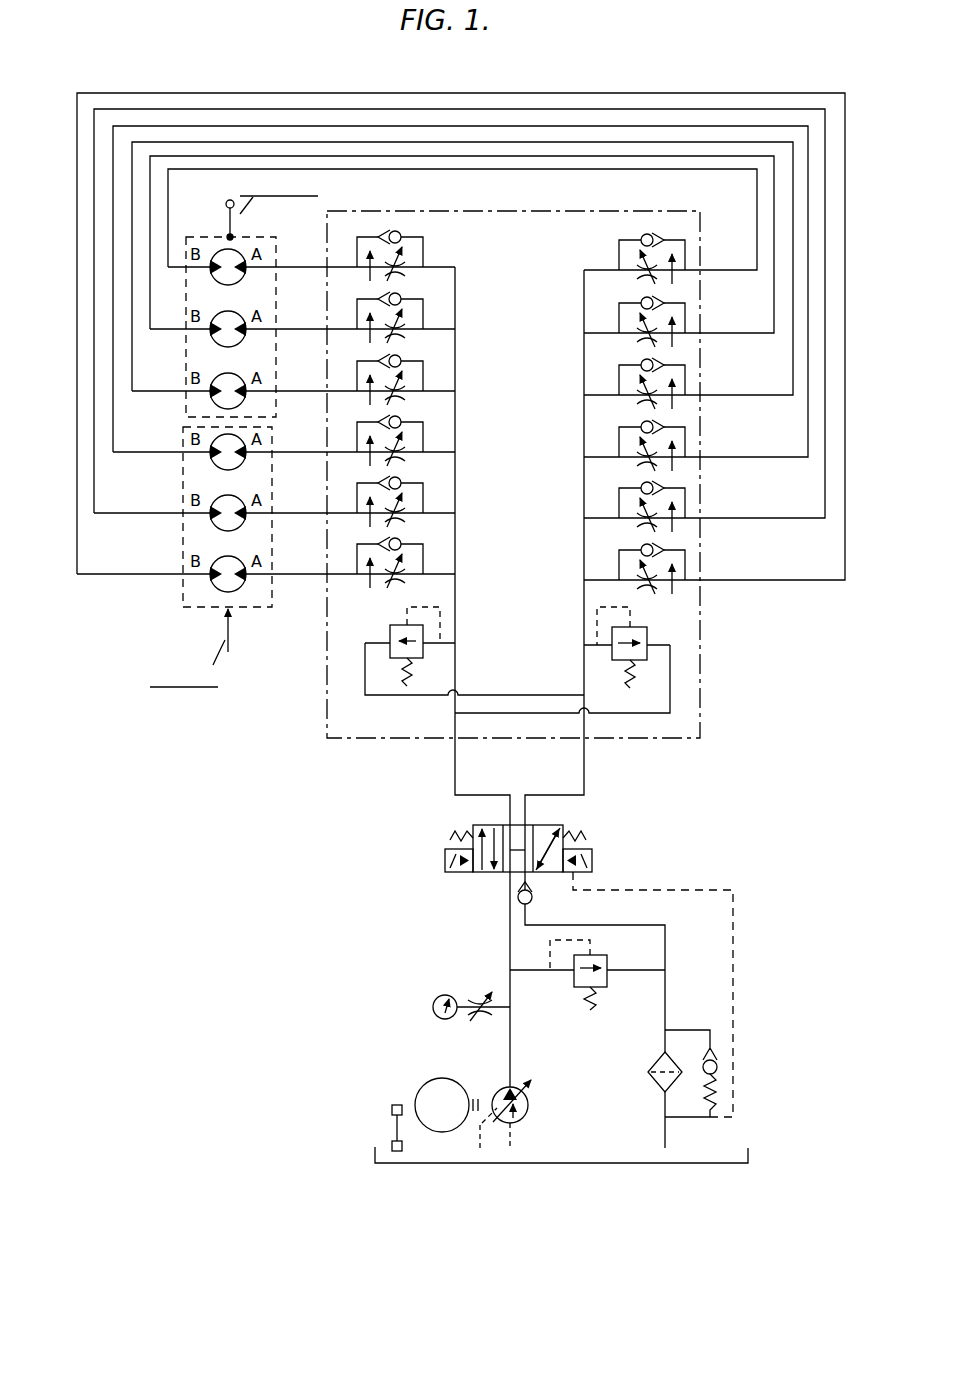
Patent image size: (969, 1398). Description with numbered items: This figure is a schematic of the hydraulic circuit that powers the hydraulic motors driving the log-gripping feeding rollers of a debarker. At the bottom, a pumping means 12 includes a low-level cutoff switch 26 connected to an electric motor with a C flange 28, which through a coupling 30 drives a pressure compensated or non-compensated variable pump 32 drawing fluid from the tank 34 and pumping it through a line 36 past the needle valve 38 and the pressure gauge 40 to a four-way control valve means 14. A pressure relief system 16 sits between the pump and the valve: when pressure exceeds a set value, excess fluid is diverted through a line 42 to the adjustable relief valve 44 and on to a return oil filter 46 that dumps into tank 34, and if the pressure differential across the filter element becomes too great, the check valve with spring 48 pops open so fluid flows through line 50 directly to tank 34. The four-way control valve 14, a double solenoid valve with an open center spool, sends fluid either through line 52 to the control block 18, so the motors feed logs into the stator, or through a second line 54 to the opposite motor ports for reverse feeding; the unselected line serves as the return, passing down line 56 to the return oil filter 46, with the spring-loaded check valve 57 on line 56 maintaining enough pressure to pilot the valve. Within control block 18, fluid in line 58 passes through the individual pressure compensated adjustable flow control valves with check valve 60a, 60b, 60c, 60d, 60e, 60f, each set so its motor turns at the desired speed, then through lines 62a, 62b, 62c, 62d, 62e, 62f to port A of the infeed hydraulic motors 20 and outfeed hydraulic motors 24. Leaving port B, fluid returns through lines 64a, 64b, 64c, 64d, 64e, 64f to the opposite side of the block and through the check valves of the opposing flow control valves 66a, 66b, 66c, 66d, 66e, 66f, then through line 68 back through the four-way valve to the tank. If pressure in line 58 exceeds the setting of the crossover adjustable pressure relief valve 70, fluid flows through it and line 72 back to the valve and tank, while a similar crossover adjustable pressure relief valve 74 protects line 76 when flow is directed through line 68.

The pumping means 12 is at (462, 1180).
The 4-way control valve means 14 is at (654, 851).
The pressure relief system 16 is at (626, 999).
The control block 18 is at (703, 732).
The infeed hydraulic motors 20 is at (237, 638).
The outfeed hydraulic motors 24 is at (263, 230).
The low-level cutoff switch 26 is at (392, 1110).
The electric motor with a C flange 28 is at (420, 1082).
The coupling 30 is at (477, 1097).
The variable pump 32 is at (528, 1108).
The tank 34 is at (630, 1165).
The line 36 is at (512, 1037).
The needle valve 38 is at (478, 995).
The pressure gauge 40 is at (432, 998).
The line 42 is at (535, 972).
The adjustable relief valve 44 is at (608, 957).
The return oil filter 46 is at (650, 1086).
The check valve with spring 48 is at (720, 1063).
The line 50 is at (692, 1118).
The line 52 is at (455, 768).
The second line 54 is at (584, 768).
The line 56 is at (608, 925).
The spring-loaded check valve 57 is at (532, 893).
The line 58 is at (455, 663).
The pressure compensated adjustable flow control valve with check valve 60a is at (423, 561).
The pressure compensated adjustable flow control valve with check valve 60b is at (423, 500).
The pressure compensated adjustable flow control valve with check valve 60c is at (423, 439).
The pressure compensated adjustable flow control valve with check valve 60d is at (423, 378).
The pressure compensated adjustable flow control valve with check valve 60e is at (423, 316).
The pressure compensated adjustable flow control valve with check valve 60f is at (423, 254).
The line 62a is at (310, 577).
The line 62b is at (310, 516).
The line 62c is at (310, 455).
The line 62d is at (310, 394).
The line 62e is at (310, 332).
The line 62f is at (310, 270).
The line 64a is at (87, 576).
The line 64b is at (104, 515).
The line 64c is at (123, 454).
The line 64d is at (142, 393).
The line 64e is at (160, 331).
The line 64f is at (178, 269).
The opposing pressure compensated adjustable flow control valve 66a is at (687, 567).
The opposing pressure compensated adjustable flow control valve 66b is at (687, 505).
The opposing pressure compensated adjustable flow control valve 66c is at (687, 444).
The opposing pressure compensated adjustable flow control valve 66d is at (687, 382).
The opposing pressure compensated adjustable flow control valve 66e is at (687, 320).
The opposing pressure compensated adjustable flow control valve 66f is at (687, 257).
The line 68 is at (584, 650).
The crossover adjustable pressure relief valve 70 is at (390, 640).
The line 72 is at (390, 698).
The crossover adjustable pressure relief valve 74 is at (647, 632).
The line 76 is at (670, 677).